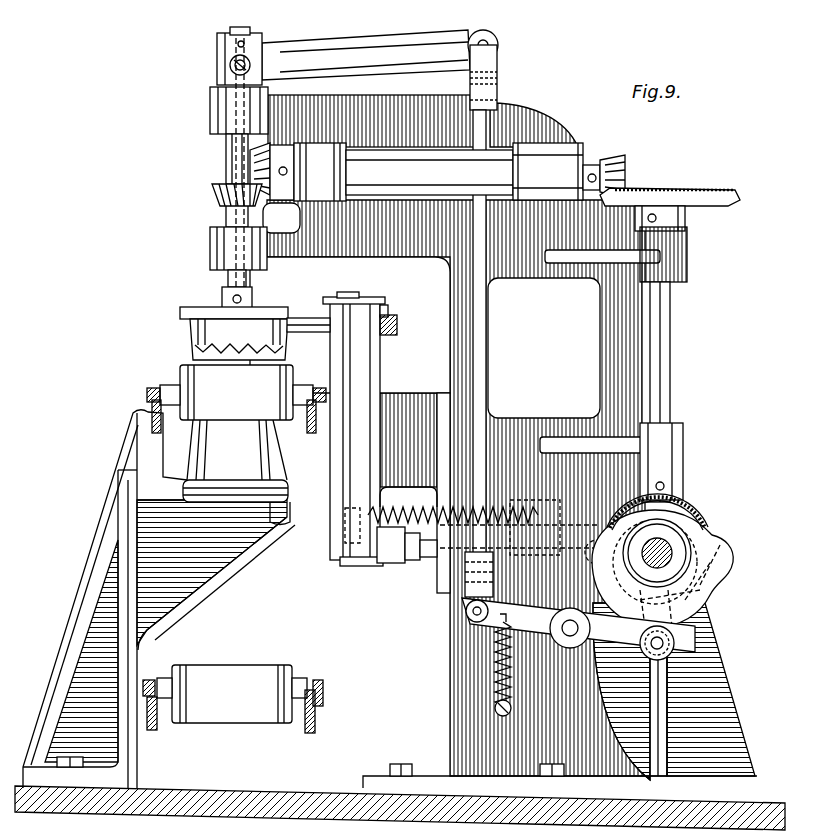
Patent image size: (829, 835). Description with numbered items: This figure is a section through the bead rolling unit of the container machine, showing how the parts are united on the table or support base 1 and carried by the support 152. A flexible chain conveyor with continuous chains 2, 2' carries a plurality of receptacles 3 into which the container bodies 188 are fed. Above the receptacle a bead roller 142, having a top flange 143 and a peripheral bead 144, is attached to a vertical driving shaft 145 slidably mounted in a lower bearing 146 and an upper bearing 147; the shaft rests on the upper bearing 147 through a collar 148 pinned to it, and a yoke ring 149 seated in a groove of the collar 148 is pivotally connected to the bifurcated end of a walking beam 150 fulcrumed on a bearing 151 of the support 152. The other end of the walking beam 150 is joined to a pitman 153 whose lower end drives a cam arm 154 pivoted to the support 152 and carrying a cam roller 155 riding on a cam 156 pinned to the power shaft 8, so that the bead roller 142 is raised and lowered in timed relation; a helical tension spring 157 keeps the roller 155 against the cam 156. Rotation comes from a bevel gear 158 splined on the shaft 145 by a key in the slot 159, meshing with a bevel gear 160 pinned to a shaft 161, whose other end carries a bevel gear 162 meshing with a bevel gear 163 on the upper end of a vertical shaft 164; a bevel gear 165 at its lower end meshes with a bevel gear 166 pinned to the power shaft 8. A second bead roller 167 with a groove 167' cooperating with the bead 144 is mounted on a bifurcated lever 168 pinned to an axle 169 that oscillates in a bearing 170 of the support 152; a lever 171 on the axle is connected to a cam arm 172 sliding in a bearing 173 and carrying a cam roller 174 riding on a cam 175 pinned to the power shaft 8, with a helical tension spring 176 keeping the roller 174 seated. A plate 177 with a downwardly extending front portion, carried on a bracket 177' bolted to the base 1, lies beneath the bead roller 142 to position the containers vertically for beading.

The table or support base 1 is at (305, 788).
The continuous chain 2 is at (144, 544).
The continuous chain 2' is at (312, 542).
The receptacle 3 is at (190, 372).
The power shaft 8 is at (668, 545).
The bead roller 142 is at (224, 300).
The top flange 143 is at (186, 310).
The peripheral bead 144 is at (195, 332).
The vertical driving shaft 145 is at (243, 36).
The bearing 146 is at (212, 240).
The bearing 147 is at (212, 100).
The collar 148 is at (232, 34).
The yoke ring 149 is at (217, 60).
The walking beam 150 is at (316, 45).
The bearing 151 is at (478, 40).
The support 152 is at (513, 124).
The pitman 153 is at (498, 78).
The cam arm 154 is at (468, 600).
The cam roller 155 is at (675, 642).
The cam 156 is at (720, 566).
The helical tension spring 157 is at (498, 660).
The bevel gear 158 is at (225, 182).
The slot 159 is at (240, 150).
The bevel gear 160 is at (232, 130).
The shaft 161 is at (388, 180).
The bevel gear 162 is at (615, 165).
The bevel gear 163 is at (678, 192).
The vertical shaft 164 is at (672, 312).
The bevel gear 165 is at (665, 505).
The bevel gear 166 is at (690, 520).
The bead roller 167 is at (306, 308).
The groove 167' is at (407, 341).
The bifurcated lever 168 is at (384, 308).
The axle 169 is at (360, 297).
The bearing 170 is at (352, 461).
The lever 171 is at (340, 522).
The cam arm 172 is at (430, 555).
The bearing 173 is at (540, 505).
The cam roller 174 is at (595, 538).
The cam 175 is at (725, 535).
The helical tension spring 176 is at (408, 505).
The plate 177 is at (159, 599).
The bracket 177' is at (98, 495).
The container body 188 is at (210, 437).